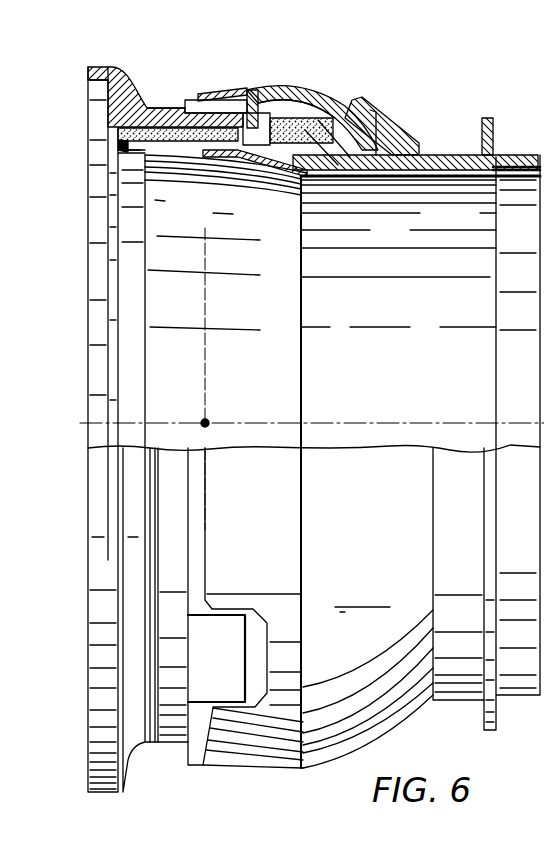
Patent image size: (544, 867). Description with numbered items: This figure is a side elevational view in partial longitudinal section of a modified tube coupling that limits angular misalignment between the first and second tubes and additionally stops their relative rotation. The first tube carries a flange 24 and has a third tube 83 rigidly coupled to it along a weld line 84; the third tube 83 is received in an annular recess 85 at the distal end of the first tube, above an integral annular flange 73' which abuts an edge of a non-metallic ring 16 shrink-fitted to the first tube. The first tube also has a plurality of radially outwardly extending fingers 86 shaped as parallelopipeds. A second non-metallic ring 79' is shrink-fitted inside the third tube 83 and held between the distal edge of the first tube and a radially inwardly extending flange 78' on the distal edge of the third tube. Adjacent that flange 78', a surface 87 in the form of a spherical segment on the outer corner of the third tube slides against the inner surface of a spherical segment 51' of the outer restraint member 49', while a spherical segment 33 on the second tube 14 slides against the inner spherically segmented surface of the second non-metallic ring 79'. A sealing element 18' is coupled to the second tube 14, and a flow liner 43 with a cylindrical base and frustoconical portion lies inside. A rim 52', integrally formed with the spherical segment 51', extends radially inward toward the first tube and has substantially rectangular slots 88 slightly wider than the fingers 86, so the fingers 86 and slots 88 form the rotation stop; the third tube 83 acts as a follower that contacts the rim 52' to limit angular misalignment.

The flange 24 is at (147, 108).
The non-metallic ring 16 is at (121, 150).
The annular recess 85 is at (203, 142).
The fingers 86 is at (190, 100).
The rim 52' is at (223, 71).
The weld line 84 is at (257, 110).
The third tube 83 is at (279, 98).
The spherical segment 51' is at (301, 79).
The surface 87 is at (349, 155).
The radially inwardly extending flange 78' is at (353, 118).
The outer restraint member 49' is at (393, 123).
The second tube 14 is at (517, 148).
The flow liner 43 is at (437, 190).
The second non-metallic ring 79' is at (350, 468).
The spherical segment 33 is at (310, 178).
The sealing element 18' is at (255, 192).
The integral annular flange 73' is at (226, 183).
The rectangular slots 88 is at (257, 623).